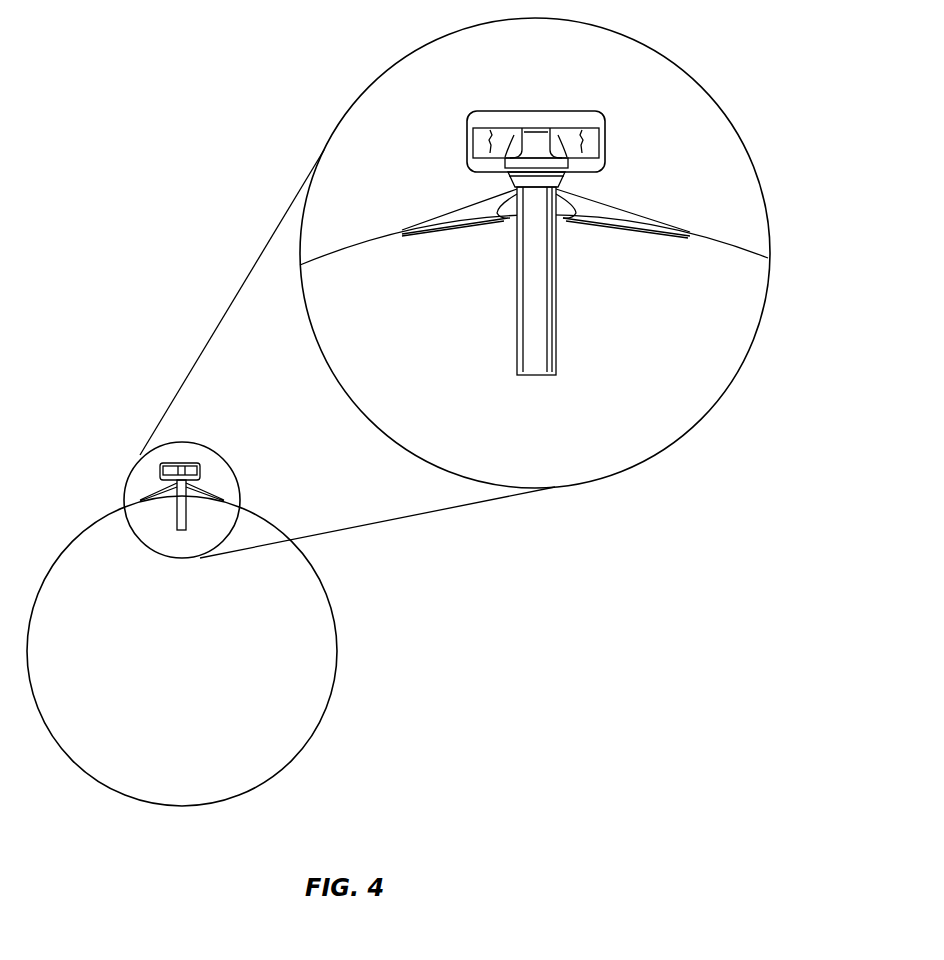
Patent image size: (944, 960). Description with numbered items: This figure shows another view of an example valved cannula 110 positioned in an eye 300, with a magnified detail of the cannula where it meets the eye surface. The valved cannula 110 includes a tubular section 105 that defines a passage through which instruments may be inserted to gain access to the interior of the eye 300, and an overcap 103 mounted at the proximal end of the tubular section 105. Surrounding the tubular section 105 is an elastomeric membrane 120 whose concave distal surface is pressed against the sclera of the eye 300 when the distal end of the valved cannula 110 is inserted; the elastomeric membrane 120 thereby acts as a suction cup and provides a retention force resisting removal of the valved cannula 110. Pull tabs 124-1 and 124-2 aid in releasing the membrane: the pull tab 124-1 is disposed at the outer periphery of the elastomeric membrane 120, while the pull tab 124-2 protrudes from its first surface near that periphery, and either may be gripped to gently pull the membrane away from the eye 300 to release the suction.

The valved cannula 110 is at (600, 187).
The overcap 103 is at (605, 137).
The tubular section 105 is at (556, 340).
The elastomeric membrane 120 is at (447, 213).
The pull tab 124-1 is at (683, 229).
The pull tab 124-2 is at (660, 217).
The eye 300 is at (337, 670).